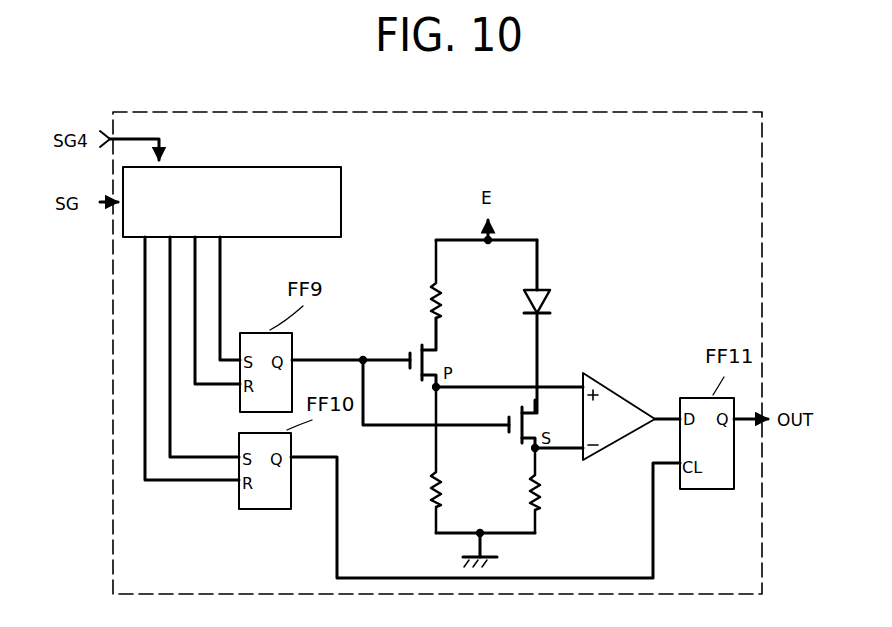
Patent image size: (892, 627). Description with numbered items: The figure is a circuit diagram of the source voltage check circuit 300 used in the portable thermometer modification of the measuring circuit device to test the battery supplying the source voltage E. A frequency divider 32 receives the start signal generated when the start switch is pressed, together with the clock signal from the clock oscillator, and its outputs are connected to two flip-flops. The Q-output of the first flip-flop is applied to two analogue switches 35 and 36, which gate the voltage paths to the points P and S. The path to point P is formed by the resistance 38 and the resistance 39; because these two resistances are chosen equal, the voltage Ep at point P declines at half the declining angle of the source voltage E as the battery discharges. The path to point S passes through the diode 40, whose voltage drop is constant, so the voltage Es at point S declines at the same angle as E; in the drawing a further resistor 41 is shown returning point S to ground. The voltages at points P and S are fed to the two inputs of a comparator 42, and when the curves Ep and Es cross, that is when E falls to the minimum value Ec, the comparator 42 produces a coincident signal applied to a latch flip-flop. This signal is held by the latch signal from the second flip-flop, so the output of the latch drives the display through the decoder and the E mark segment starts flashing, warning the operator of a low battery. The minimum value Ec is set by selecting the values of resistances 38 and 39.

The source voltage check circuit 300 is at (595, 113).
The frequency divider 32 is at (302, 167).
The analogue switch 35 is at (412, 352).
The analogue switch 36 is at (512, 417).
The resistance 38 is at (447, 300).
The resistance 39 is at (439, 482).
The diode 40 is at (547, 297).
The resistor 41 is at (543, 493).
The comparator 42 is at (615, 390).